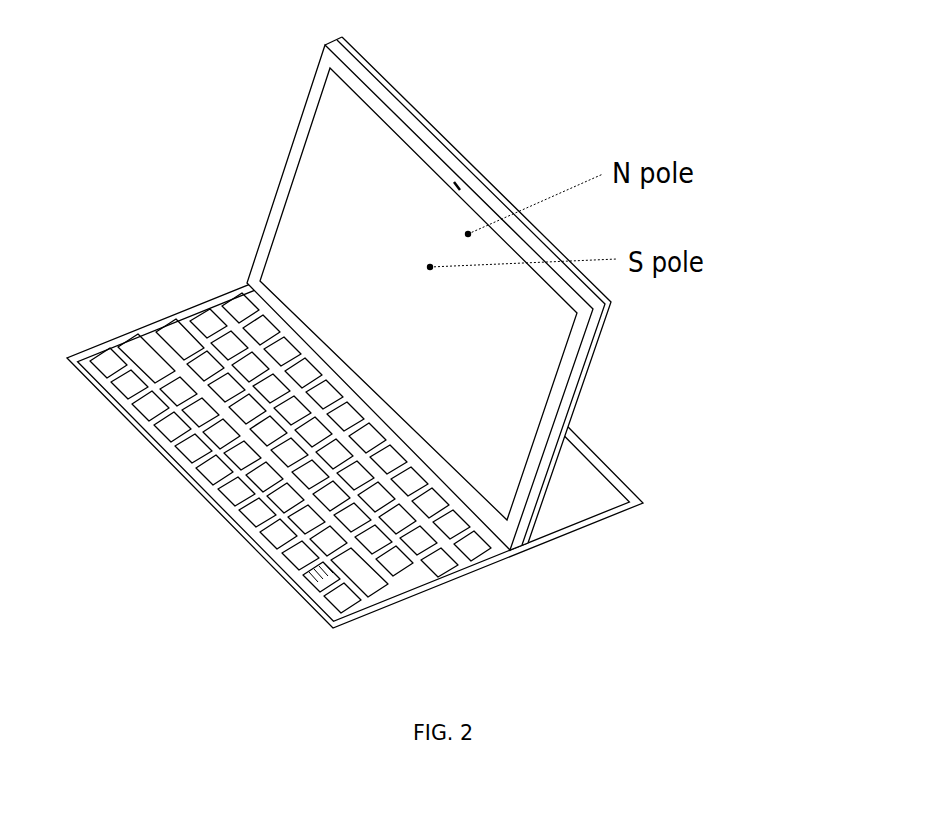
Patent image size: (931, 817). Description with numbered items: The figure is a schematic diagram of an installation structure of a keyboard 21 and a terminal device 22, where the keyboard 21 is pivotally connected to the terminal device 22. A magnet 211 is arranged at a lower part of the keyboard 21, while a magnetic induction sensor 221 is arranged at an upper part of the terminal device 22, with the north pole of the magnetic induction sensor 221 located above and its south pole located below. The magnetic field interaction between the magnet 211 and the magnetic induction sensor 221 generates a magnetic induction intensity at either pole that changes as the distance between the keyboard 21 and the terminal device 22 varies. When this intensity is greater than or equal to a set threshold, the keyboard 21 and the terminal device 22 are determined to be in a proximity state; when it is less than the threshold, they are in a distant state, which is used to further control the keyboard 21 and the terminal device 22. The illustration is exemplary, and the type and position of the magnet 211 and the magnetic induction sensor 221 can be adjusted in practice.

The keyboard 21 is at (437, 567).
The magnet 211 is at (252, 540).
The terminal device 22 is at (550, 483).
The magnetic induction sensor 221 is at (443, 252).